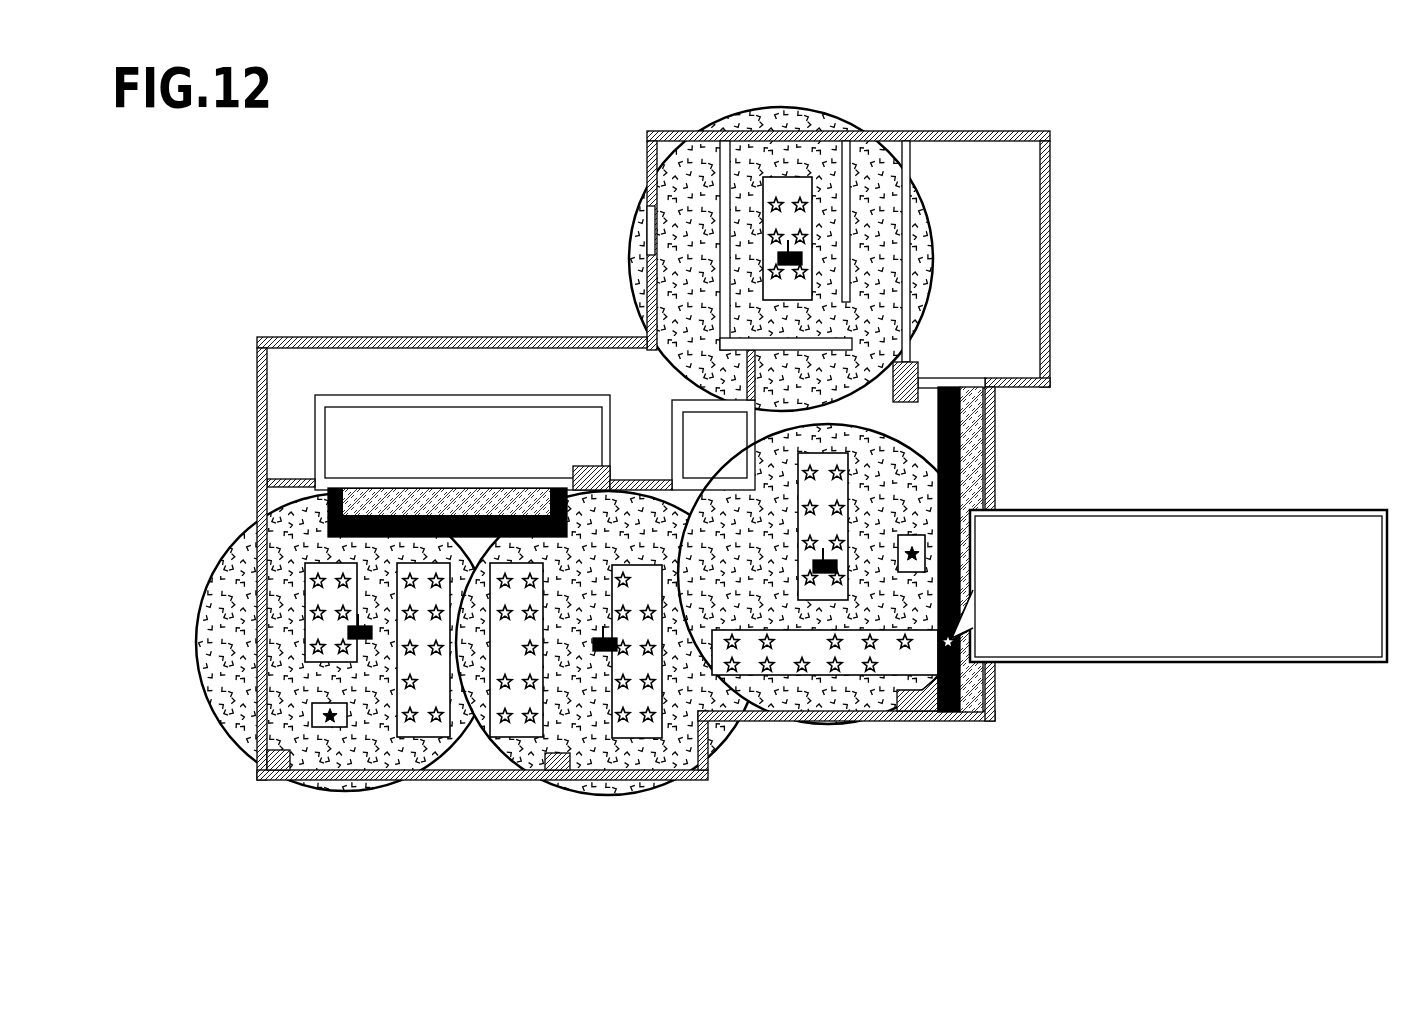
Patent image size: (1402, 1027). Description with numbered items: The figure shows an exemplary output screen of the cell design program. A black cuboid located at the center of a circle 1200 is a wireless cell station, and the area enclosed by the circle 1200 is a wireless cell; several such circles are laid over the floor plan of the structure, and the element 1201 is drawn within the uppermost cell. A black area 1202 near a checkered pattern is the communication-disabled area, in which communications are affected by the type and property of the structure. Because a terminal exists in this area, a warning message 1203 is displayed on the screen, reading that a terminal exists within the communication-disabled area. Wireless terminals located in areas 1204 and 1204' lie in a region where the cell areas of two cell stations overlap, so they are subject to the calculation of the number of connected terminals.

The circle 1200 is at (832, 115).
The terminal 1201 is at (798, 257).
The black area 1202 is at (330, 490).
The warning message 1203 is at (1080, 510).
The area 1204 is at (825, 710).
The area 1204' is at (507, 707).